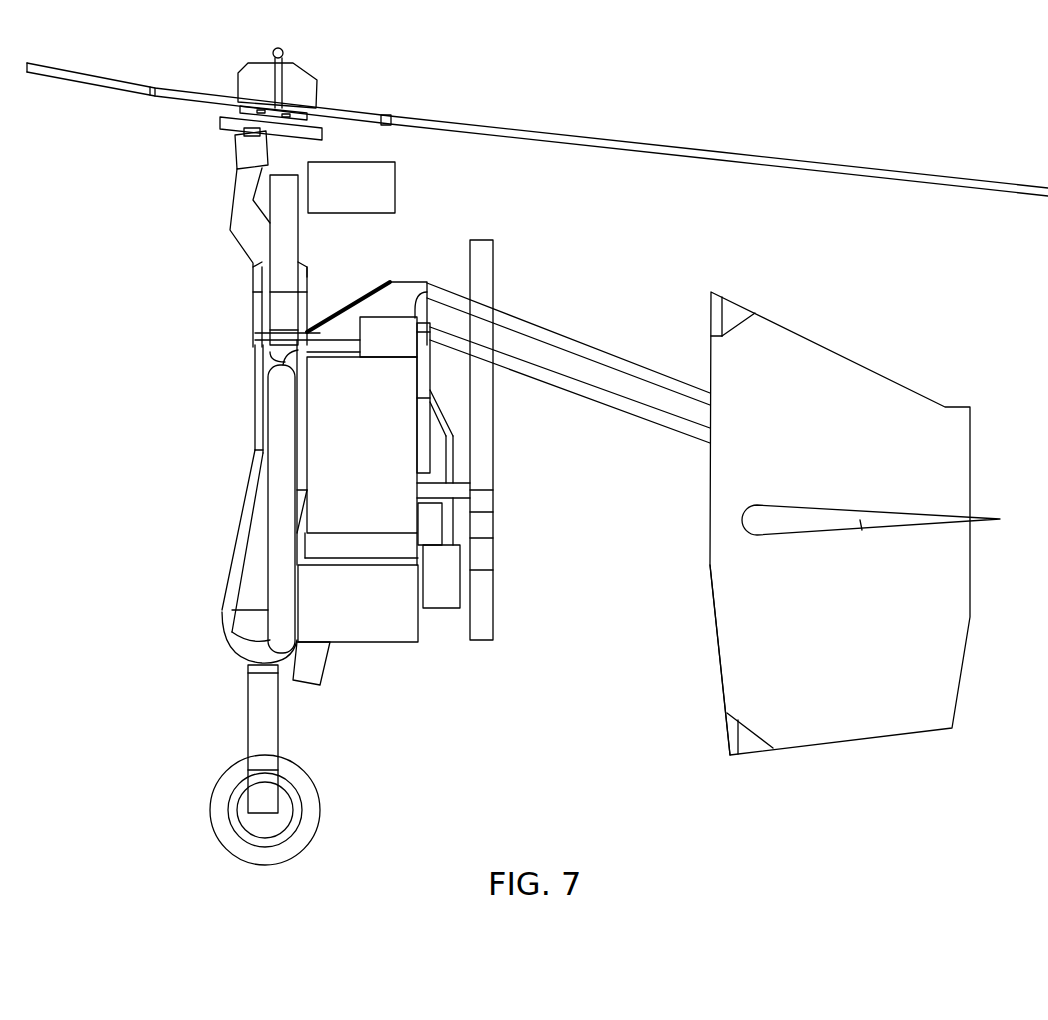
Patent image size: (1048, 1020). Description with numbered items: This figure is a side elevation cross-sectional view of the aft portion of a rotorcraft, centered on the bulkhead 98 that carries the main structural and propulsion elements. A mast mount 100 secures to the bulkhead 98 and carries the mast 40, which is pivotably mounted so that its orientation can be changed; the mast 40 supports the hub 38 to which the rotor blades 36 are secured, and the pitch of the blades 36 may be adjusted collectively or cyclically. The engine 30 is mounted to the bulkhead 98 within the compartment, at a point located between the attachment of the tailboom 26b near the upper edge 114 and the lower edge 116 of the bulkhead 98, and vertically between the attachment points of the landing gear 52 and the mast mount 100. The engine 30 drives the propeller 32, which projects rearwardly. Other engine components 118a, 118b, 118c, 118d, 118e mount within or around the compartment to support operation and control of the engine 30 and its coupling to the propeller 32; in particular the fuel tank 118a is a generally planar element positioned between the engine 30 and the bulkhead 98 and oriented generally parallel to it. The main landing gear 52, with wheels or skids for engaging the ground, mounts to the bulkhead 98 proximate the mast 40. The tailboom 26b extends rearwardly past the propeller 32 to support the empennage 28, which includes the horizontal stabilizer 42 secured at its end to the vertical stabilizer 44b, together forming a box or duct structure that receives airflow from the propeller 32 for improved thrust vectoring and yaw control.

The boom 26b is at (555, 360).
The empennage 28 is at (893, 340).
The engine 30 is at (357, 452).
The propeller 32 is at (483, 458).
The rotor blade 36 is at (630, 146).
The hub 38 is at (265, 88).
The mast 40 is at (243, 217).
The horizontal stabilizer 42 is at (860, 522).
The vertical stabilizer 44b is at (787, 650).
The main landing gear 52 is at (268, 724).
The bulkhead 98 is at (243, 527).
The mast mount 100 is at (290, 243).
The upper edge 114 is at (265, 350).
The lower edge 116 is at (227, 663).
The fuel tank 118a is at (260, 637).
The engine component 118b is at (377, 620).
The engine component 118c is at (447, 590).
The engine component 118d is at (375, 183).
The engine component 118e is at (397, 290).